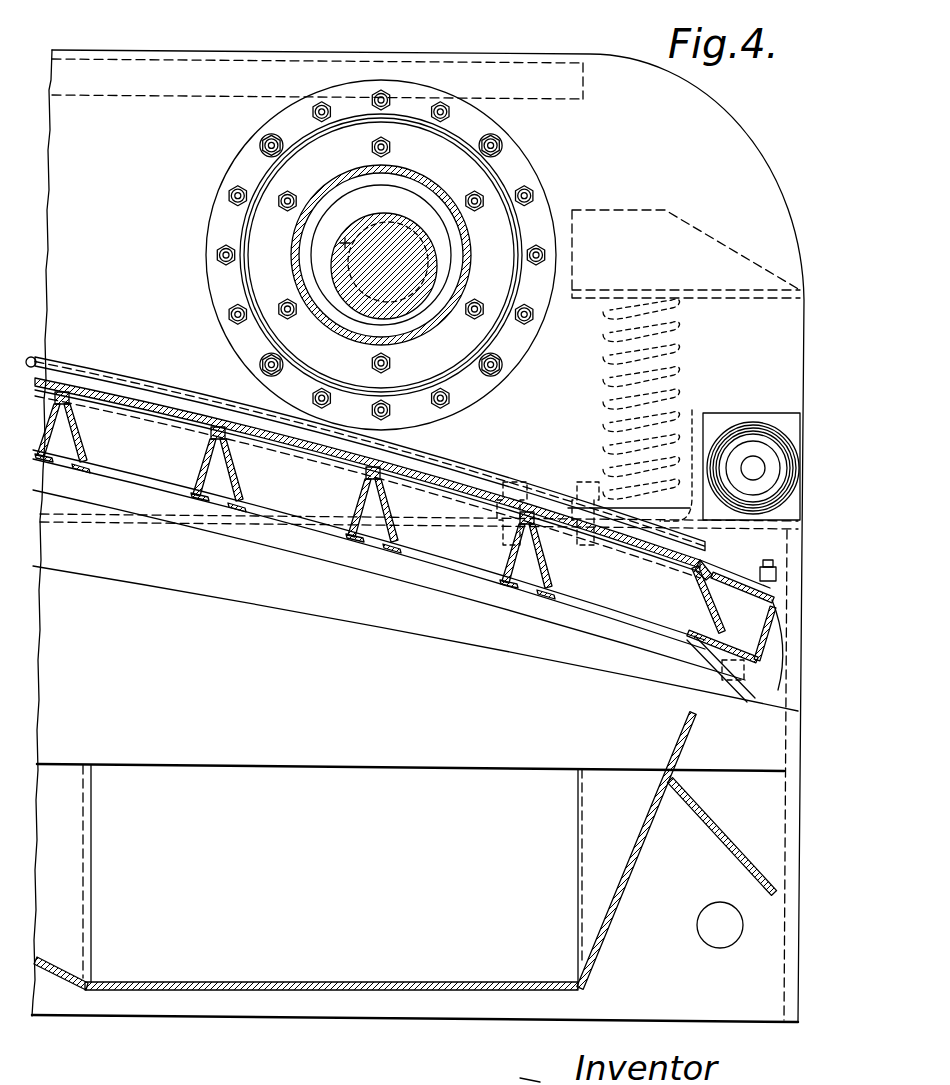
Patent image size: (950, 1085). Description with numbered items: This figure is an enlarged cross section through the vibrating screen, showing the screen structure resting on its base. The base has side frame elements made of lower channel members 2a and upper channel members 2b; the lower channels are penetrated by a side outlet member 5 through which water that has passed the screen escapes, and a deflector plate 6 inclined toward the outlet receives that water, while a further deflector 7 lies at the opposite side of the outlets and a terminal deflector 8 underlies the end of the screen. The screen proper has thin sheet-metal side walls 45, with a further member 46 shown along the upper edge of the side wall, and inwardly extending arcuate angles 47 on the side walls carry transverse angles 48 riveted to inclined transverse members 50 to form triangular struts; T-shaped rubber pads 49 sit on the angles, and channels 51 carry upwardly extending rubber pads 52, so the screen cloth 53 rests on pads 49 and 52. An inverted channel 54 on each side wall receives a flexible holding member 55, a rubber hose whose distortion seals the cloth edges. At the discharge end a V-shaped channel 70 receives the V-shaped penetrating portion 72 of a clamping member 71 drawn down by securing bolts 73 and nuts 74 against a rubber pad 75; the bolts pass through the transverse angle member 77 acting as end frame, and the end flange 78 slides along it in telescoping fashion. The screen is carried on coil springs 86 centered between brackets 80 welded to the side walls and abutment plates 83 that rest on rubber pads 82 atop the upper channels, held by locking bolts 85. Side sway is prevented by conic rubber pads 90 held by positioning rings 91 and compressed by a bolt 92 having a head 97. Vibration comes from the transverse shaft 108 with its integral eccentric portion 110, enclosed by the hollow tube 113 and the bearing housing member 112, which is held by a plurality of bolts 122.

The lower channel member 2a is at (276, 1015).
The upper channel member 2b is at (250, 757).
The side outlet member 5 is at (197, 965).
The deflector plate 6 is at (55, 975).
The deflector 7 is at (636, 855).
The terminal deflector 8 is at (712, 830).
The side wall 45 is at (162, 103).
The cover plate 46 is at (105, 62).
The inwardly extending angle 47 is at (345, 560).
The transverse angle 48 is at (200, 462).
The rubber pad 49 is at (60, 391).
The inclined transverse member 50 is at (72, 428).
The channel 51 is at (310, 490).
The rubber pad 52 is at (283, 440).
The screen cloth 53 is at (128, 398).
The inverted channel 54 is at (105, 363).
The flexible holding member 55 is at (32, 357).
The V-shaped channel 70 is at (703, 597).
The clamping member 71 is at (728, 578).
The V-shaped penetrating portion 72 is at (720, 572).
The securing bolt 73 is at (710, 657).
The nut 74 is at (757, 566).
The rubber pad 75 is at (700, 572).
The transverse angle member 77 is at (707, 641).
The end flange 78 is at (773, 648).
The bracket 80 is at (645, 215).
The rubber pad 82 is at (692, 430).
The abutment plate 83 is at (632, 503).
The locking bolt 85 is at (517, 480).
The coil spring 86 is at (606, 363).
The conic rubber pad 90 is at (752, 432).
The positioning ring 91 is at (768, 428).
The bolt 92 is at (742, 455).
The bolt head 97 is at (733, 450).
The shaft 108 is at (345, 243).
The eccentric portion 110 is at (345, 292).
The bearing housing member 112 is at (262, 212).
The hollow tube 113 is at (322, 180).
The bolt 122 is at (441, 110).